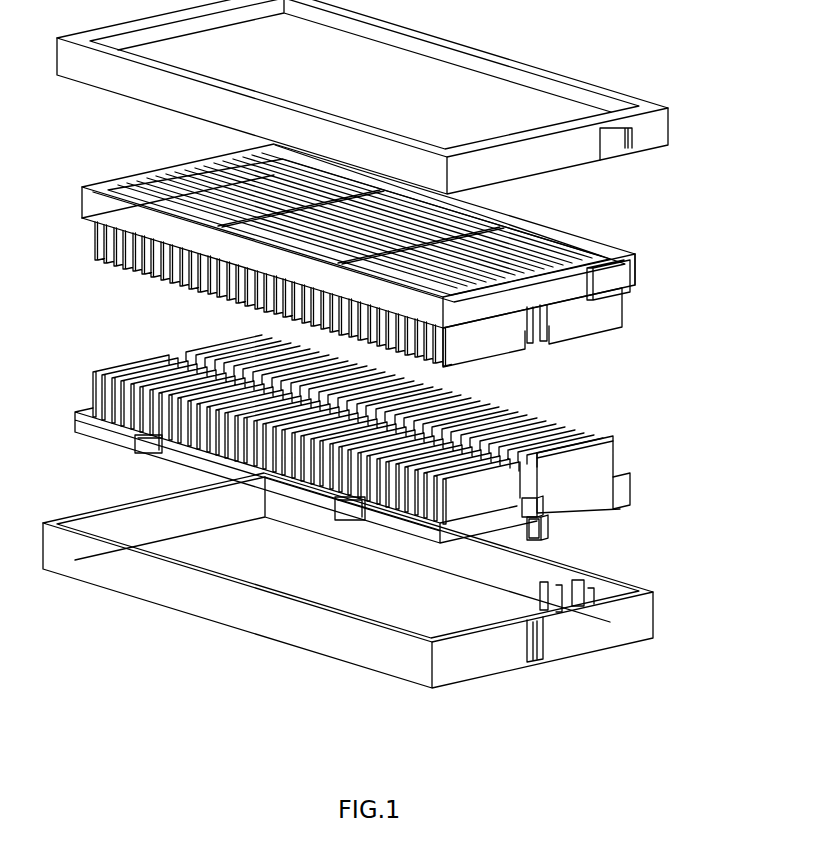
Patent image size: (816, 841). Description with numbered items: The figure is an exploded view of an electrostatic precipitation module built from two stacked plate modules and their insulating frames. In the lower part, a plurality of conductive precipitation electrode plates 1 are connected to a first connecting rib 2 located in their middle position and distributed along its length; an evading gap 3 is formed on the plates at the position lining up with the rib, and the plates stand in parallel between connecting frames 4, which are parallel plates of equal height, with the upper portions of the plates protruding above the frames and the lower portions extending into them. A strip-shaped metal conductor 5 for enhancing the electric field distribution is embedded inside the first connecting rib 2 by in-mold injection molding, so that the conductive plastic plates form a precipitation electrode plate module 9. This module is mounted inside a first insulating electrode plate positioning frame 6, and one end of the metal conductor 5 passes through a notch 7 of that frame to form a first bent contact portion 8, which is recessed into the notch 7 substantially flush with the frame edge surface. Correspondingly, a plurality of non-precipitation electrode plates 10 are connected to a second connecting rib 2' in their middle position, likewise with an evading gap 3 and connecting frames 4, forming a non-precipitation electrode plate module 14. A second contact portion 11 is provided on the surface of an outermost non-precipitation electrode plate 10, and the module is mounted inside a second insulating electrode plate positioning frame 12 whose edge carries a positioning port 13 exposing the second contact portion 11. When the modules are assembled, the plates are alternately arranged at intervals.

The conductive precipitation electrode plates 1 is at (597, 455).
The first connecting rib 2 is at (552, 499).
The second connecting rib 2' is at (359, 224).
The evading gap 3 is at (537, 413).
The connecting frames 4 is at (95, 210).
The metal conductor 5 is at (546, 524).
The first insulating electrode plate positioning frame 6 is at (210, 612).
The notch 7 is at (545, 645).
The first bent contact portion 8 is at (540, 533).
The precipitation electrode plate module 9 is at (637, 491).
The non-precipitation electrode plates 10 is at (597, 322).
The second contact portion 11 is at (612, 285).
The second insulating electrode plate positioning frame 12 is at (580, 85).
The positioning port 13 is at (612, 138).
The non-precipitation electrode plate module 14 is at (646, 289).